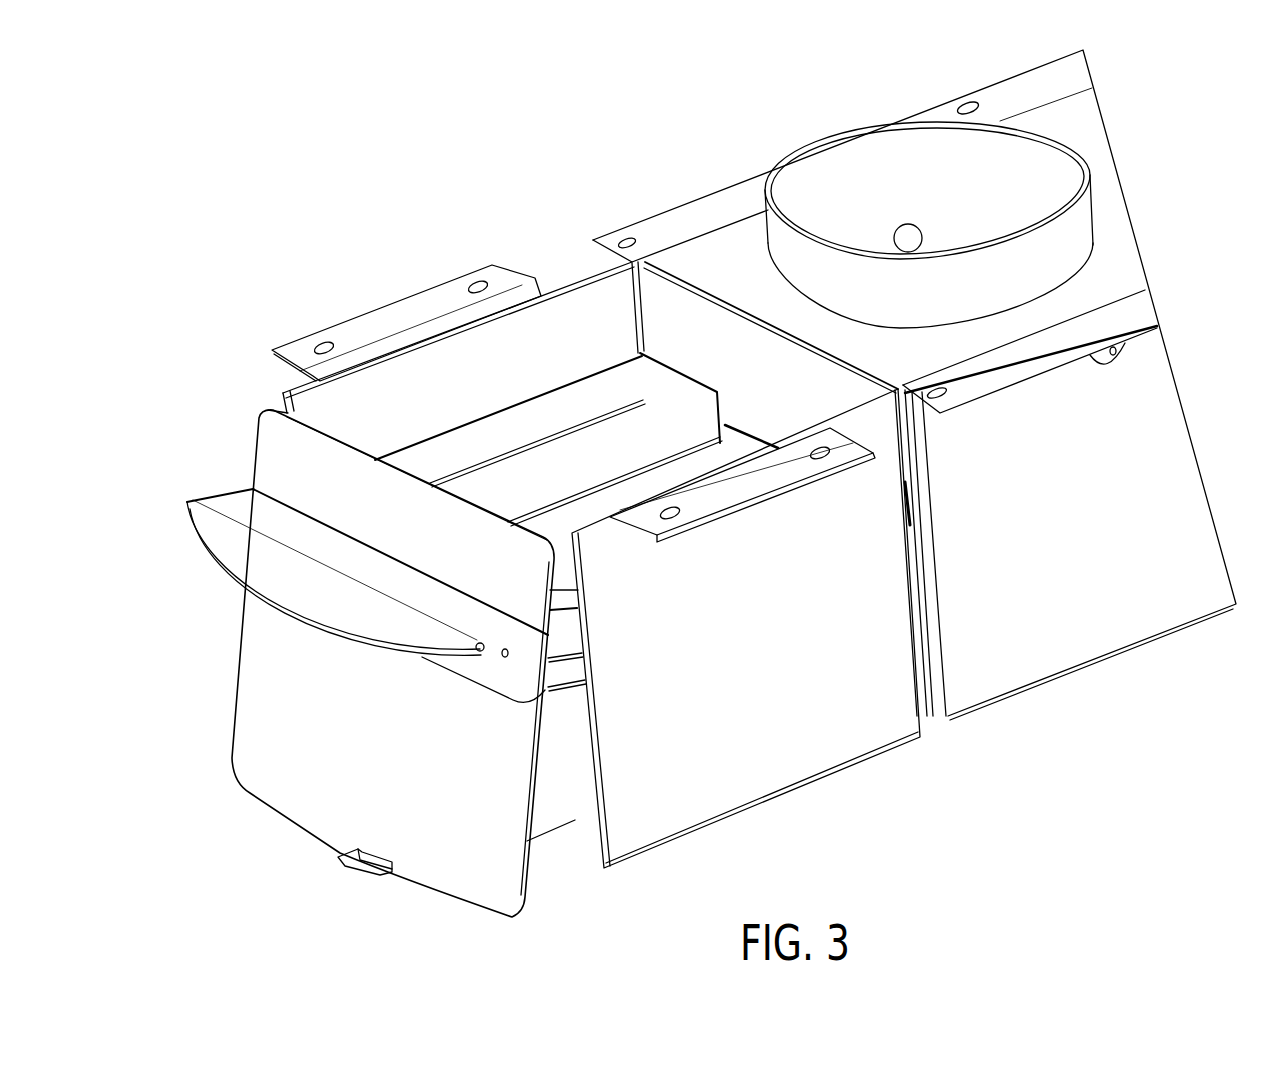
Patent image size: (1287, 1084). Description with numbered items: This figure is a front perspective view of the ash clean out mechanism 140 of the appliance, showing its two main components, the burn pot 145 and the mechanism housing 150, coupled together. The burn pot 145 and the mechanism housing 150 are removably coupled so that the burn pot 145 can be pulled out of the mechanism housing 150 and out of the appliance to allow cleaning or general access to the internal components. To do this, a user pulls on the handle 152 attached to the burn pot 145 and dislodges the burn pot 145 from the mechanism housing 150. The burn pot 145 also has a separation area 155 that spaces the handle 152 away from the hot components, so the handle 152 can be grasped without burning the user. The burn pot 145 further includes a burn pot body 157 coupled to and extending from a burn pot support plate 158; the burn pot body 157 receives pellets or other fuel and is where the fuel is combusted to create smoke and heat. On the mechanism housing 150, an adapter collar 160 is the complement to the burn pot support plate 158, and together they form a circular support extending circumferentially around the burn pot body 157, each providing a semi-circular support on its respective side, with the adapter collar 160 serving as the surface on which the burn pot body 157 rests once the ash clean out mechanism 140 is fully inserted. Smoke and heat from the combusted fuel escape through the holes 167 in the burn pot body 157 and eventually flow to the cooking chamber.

The ash clean out mechanism 140 is at (350, 270).
The burn pot 145 is at (278, 378).
The mechanism housing 150 is at (1057, 76).
The handle 152 is at (281, 573).
The separation area 155 is at (562, 555).
The burn pot body 157 is at (808, 172).
The burn pot support plate 158 is at (963, 345).
The adapter collar 160 is at (1083, 252).
The holes 167 is at (910, 232).